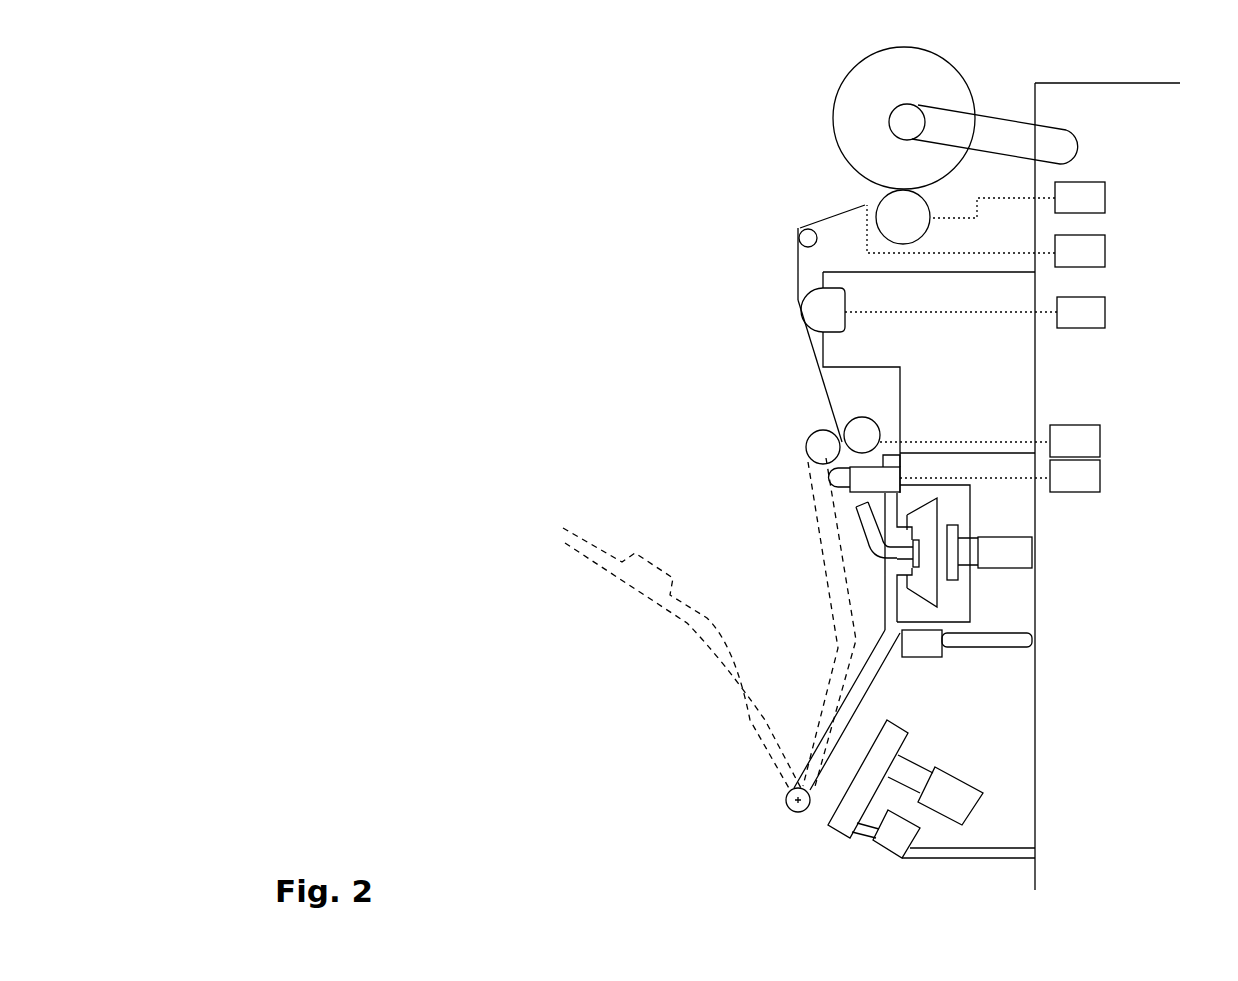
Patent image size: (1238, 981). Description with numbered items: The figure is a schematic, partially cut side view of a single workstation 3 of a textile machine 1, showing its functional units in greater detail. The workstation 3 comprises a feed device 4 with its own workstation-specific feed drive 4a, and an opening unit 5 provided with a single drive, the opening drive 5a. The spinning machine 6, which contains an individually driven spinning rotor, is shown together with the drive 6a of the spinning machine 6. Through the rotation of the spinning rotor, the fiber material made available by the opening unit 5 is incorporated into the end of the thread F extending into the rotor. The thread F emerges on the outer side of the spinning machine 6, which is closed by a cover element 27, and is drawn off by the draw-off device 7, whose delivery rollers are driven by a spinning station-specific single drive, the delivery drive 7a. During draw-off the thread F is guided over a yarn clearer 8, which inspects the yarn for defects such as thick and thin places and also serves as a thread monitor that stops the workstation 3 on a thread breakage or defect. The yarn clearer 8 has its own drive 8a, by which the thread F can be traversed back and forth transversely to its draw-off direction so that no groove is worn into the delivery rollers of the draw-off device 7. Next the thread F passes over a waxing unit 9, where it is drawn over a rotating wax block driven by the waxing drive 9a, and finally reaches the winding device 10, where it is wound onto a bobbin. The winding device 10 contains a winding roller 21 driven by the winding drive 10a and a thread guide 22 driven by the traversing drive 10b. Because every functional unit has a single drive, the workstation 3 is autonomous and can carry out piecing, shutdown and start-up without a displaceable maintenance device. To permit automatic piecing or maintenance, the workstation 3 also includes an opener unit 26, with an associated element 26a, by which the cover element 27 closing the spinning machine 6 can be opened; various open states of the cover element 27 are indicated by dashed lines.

The textile machine 1 is at (543, 207).
The workstation 3 is at (652, 475).
The feed device 4 is at (835, 818).
The feed drive 4a is at (895, 837).
The opening unit 5 is at (863, 773).
The opening drive 5a is at (963, 812).
The spinning machine 6 is at (953, 588).
The drive of the spinning machine 6a is at (1030, 543).
The draw-off device 7 is at (823, 440).
The delivery drive 7a is at (1090, 443).
The yarn clearer 8 is at (857, 478).
The drive of the yarn clearer 8a is at (1090, 480).
The waxing unit 9 is at (823, 312).
The waxing drive 9a is at (1097, 313).
The winding device 10 is at (858, 137).
The winding drive 10a is at (1095, 202).
The traversing drive 10b is at (1097, 250).
The winding roller 21 is at (908, 212).
The thread guide 22 is at (880, 200).
The opener unit 26 is at (957, 648).
The plate actuator 26a is at (920, 640).
The cover element 27 is at (863, 667).
The thread F is at (842, 442).